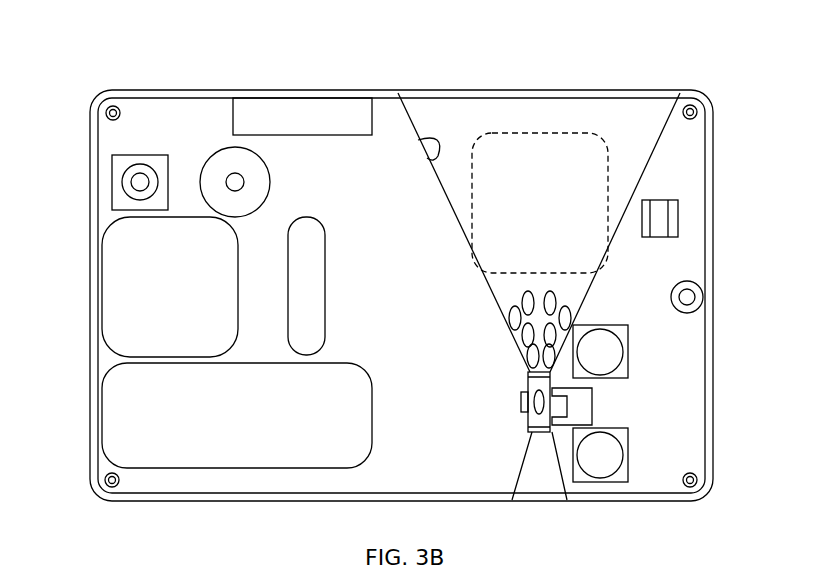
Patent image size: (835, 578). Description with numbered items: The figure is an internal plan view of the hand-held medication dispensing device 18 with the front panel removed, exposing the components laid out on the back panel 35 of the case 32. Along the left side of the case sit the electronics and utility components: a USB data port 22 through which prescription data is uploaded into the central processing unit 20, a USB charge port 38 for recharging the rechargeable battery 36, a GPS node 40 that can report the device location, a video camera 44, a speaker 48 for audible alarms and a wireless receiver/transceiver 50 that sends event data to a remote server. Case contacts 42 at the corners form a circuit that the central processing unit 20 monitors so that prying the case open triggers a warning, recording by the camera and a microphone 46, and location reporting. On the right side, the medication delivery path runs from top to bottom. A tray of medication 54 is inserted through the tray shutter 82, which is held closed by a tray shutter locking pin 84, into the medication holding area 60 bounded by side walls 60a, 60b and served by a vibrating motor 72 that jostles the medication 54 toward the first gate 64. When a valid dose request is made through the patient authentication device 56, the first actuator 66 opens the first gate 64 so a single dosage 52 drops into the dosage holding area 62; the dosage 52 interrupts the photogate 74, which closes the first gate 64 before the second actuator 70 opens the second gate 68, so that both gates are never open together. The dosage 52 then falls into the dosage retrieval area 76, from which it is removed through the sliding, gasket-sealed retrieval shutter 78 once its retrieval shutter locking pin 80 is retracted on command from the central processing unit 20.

The medication dispensing device 18 is at (196, 60).
The case 32 is at (718, 157).
The case contacts 42 is at (90, 290).
The USB data port 22 is at (90, 263).
The USB charge port 38 is at (90, 412).
The central processing unit 20 is at (118, 317).
The rechargeable battery 36 is at (218, 468).
The GPS node 40 is at (328, 262).
The video camera 44 is at (123, 173).
The speaker 48 is at (218, 160).
The wireless receiver/transceiver 50 is at (292, 110).
The tray shutter locking pin 84 is at (398, 93).
The medication holding area side wall 60a is at (422, 140).
The tray shutter 82 is at (462, 92).
The vibrating motor 72 is at (523, 132).
The medication holding area 60 is at (613, 125).
The medication holding area side wall 60b is at (657, 142).
The patient authentication device 56 is at (678, 215).
The microphone 46 is at (695, 283).
The back panel 35 is at (393, 287).
The medication 54 is at (515, 297).
The first gate 64 is at (528, 372).
The dosage 52 is at (528, 387).
The dosage holding area 62 is at (528, 425).
The second gate 68 is at (530, 435).
The first actuator 66 is at (628, 350).
The photogate 74 is at (592, 405).
The second actuator 70 is at (628, 455).
The retrieval shutter locking pin 80 is at (513, 500).
The retrieval shutter 78 is at (540, 500).
The dosage retrieval area 76 is at (545, 473).